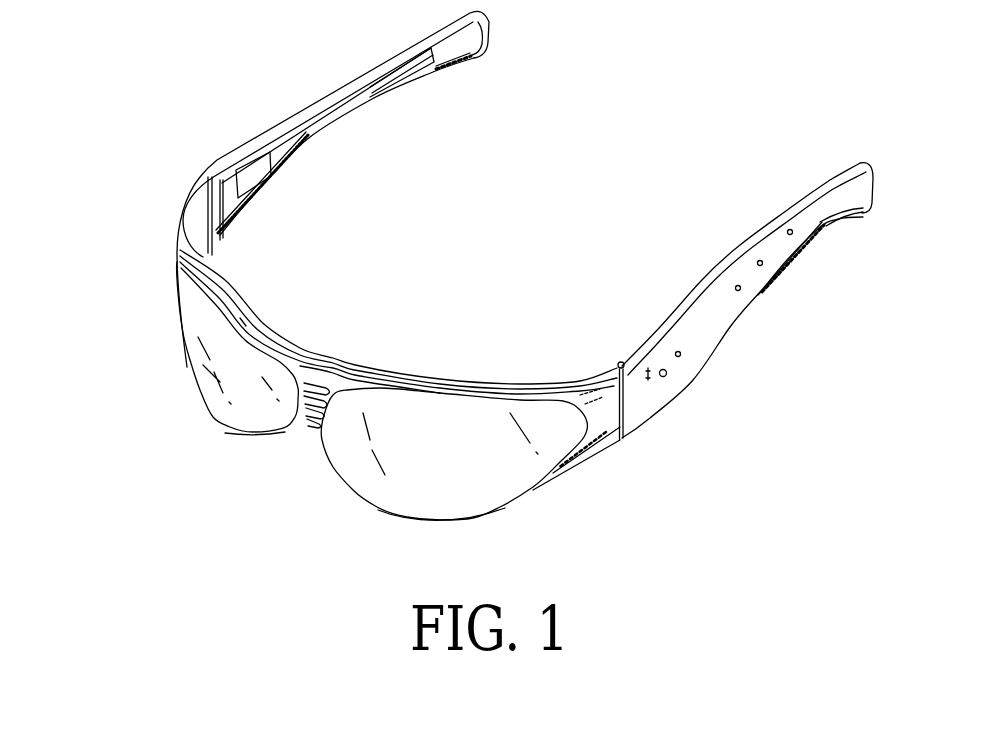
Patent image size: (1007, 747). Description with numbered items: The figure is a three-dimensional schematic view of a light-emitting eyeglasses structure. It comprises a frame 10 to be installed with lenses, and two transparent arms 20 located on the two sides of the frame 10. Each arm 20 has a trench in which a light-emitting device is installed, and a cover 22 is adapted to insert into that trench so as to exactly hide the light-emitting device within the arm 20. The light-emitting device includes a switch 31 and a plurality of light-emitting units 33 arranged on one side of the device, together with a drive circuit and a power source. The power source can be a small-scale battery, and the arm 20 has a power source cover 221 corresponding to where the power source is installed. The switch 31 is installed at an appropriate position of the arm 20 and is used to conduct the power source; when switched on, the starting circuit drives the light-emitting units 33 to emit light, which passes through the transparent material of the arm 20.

The frame 10 is at (300, 430).
The transparent arm 20 is at (228, 147).
The cover 22 is at (350, 107).
The power source cover 221 is at (254, 176).
The switch 31 is at (667, 374).
The light-emitting unit 33 is at (712, 320).